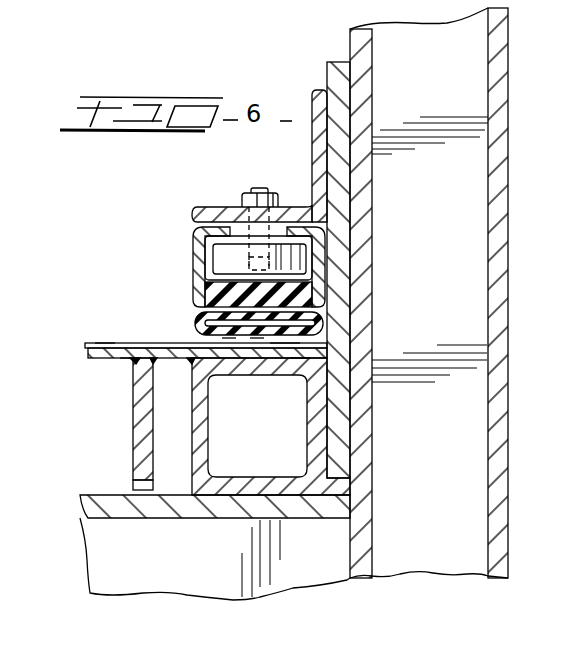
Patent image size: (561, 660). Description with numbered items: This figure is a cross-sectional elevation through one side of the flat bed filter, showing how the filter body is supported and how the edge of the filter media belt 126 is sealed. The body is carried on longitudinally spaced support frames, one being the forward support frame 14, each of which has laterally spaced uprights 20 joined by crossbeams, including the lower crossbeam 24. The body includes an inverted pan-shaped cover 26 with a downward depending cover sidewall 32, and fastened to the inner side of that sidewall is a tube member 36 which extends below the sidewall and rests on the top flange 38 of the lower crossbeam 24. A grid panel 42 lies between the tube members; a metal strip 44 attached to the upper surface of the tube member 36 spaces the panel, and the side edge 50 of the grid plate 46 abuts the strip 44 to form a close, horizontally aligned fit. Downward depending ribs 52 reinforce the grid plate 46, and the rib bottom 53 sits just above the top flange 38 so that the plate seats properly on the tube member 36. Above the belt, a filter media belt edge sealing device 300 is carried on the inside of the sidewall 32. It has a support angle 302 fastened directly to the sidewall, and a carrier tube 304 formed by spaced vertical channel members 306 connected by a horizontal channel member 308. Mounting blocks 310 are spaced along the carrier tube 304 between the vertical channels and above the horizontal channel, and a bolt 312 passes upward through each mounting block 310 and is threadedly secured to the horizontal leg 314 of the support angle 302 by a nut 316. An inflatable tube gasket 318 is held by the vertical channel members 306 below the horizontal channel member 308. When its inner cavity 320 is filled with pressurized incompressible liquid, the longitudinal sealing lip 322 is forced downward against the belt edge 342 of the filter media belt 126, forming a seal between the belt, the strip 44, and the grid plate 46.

The forward support frame 14 is at (443, 38).
The upright 20 is at (452, 459).
The lower crossbeam 24 is at (226, 578).
The cover 26 is at (338, 203).
The cover sidewall 32 is at (340, 250).
The tube member 36 is at (200, 428).
The top flange 38 is at (167, 510).
The grid panel 42 is at (115, 355).
The metal strip 44 is at (283, 347).
The grid plate 46 is at (85, 352).
The side edge 50 is at (297, 363).
The rib 52 is at (142, 417).
The rib bottom 53 is at (142, 492).
The filter media belt 126 is at (127, 320).
The filter media belt edge sealing device 300 is at (200, 203).
The support angle 302 is at (322, 140).
The carrier tube 304 is at (197, 257).
The vertical channel member 306 is at (205, 273).
The horizontal channel member 308 is at (215, 295).
The mounting block 310 is at (228, 242).
The bolt 312 is at (258, 187).
The horizontal leg 314 is at (193, 211).
The nut 316 is at (240, 200).
The inflatable tube gasket 318 is at (323, 325).
The inner cavity 320 is at (256, 340).
The longitudinal sealing lip 322 is at (228, 340).
The belt edge 342 is at (318, 338).